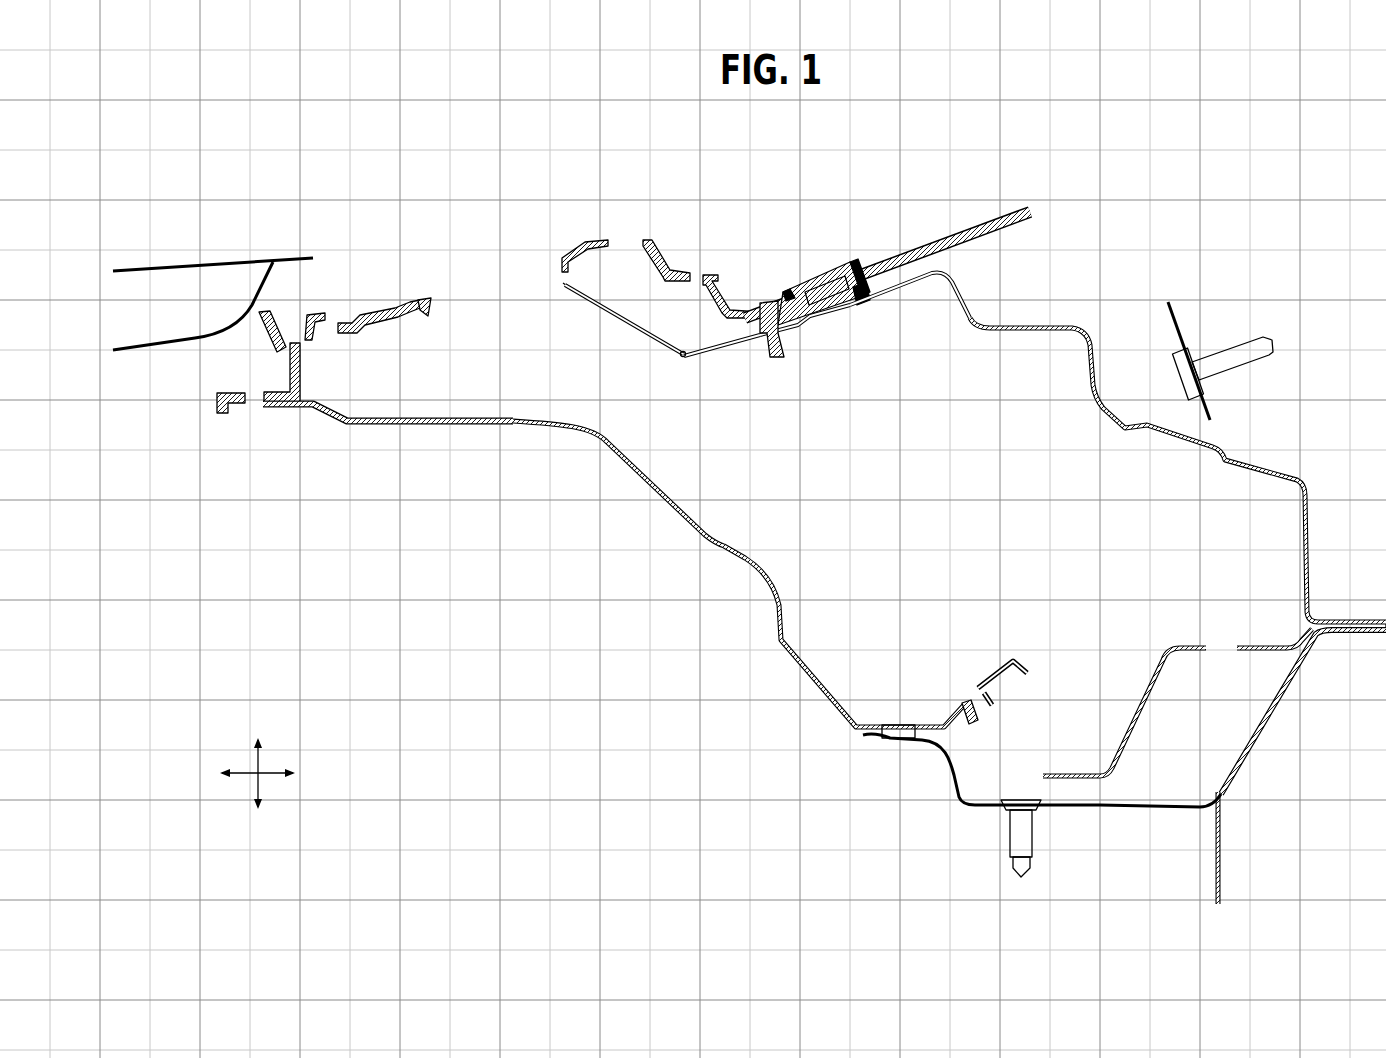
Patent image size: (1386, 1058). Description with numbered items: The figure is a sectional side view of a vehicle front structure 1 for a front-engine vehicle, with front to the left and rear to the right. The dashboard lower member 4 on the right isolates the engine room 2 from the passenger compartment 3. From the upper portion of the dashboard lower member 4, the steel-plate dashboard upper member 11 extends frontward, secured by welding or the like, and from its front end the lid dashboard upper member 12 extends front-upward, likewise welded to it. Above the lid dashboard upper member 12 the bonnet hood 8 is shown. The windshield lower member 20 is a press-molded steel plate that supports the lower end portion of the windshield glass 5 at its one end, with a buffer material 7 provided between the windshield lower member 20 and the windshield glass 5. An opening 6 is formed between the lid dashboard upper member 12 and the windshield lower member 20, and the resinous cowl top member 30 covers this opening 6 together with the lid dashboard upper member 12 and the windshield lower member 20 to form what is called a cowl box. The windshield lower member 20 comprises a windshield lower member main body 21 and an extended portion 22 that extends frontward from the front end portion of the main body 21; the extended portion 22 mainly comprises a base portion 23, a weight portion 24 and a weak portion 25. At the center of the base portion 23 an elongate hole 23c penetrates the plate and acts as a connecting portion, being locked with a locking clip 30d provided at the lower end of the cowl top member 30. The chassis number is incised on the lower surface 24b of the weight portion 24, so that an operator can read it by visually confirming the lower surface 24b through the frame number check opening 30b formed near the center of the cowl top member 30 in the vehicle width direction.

The vehicle front structure 1 is at (1093, 140).
The engine room 2 is at (431, 675).
The passenger compartment 3 is at (1314, 438).
The dashboard lower member 4 is at (1239, 772).
The windshield glass 5 is at (934, 238).
The opening 6 is at (653, 422).
The buffer material 7 is at (893, 291).
The bonnet hood 8 is at (208, 262).
The dashboard upper member 11 is at (1148, 810).
The lid dashboard upper member 12 is at (486, 426).
The windshield lower member 20 is at (848, 322).
The windshield lower member main body 21 is at (1040, 332).
The extended portion 22 is at (808, 271).
The base portion 23 is at (793, 313).
The elongate hole 23c is at (727, 352).
The weight portion 24 is at (620, 332).
The lower surface 24b is at (597, 300).
The weak portion 25 is at (686, 357).
The cowl top member 30 is at (393, 305).
The frame number check opening 30b is at (428, 312).
The locking clip 30d is at (772, 358).